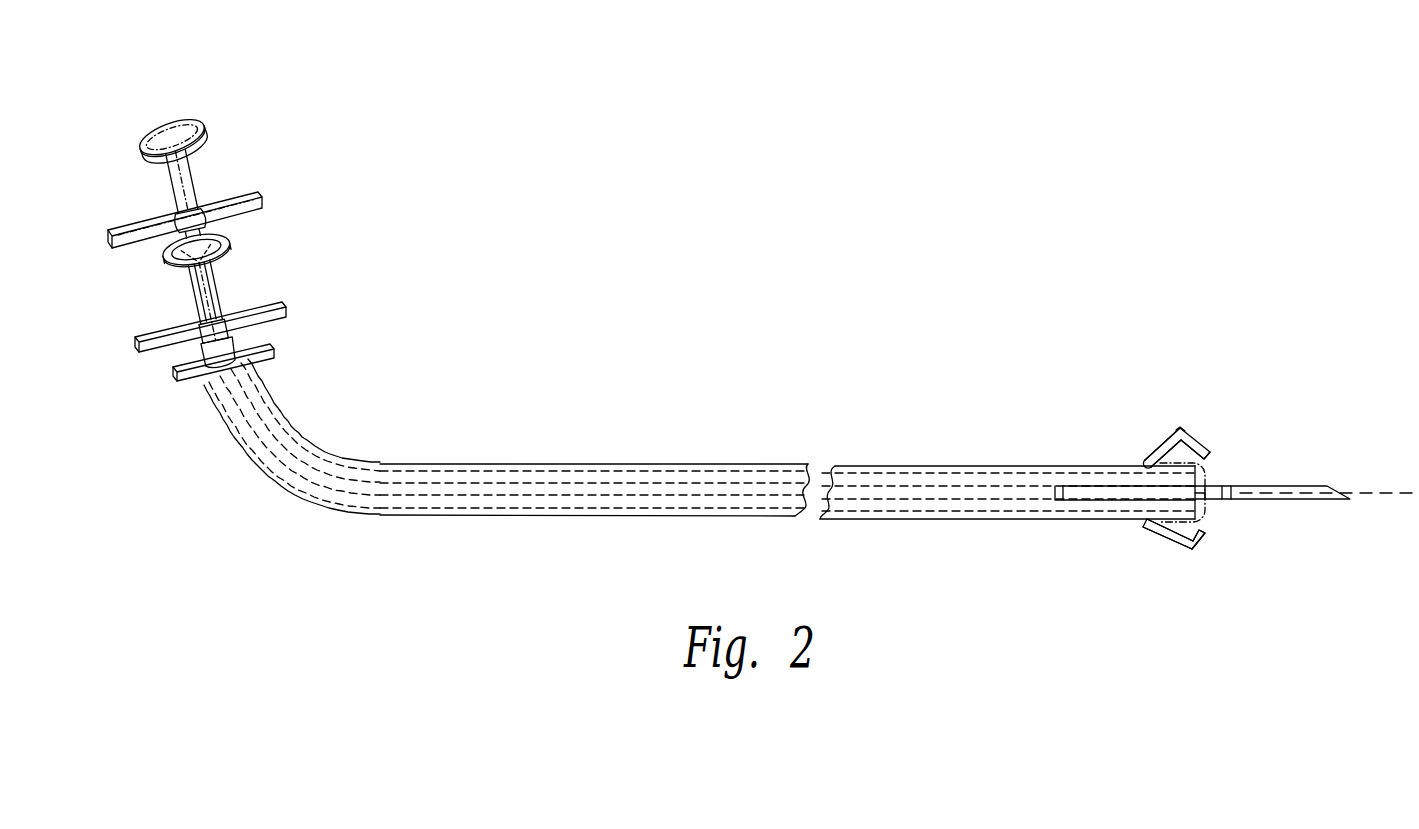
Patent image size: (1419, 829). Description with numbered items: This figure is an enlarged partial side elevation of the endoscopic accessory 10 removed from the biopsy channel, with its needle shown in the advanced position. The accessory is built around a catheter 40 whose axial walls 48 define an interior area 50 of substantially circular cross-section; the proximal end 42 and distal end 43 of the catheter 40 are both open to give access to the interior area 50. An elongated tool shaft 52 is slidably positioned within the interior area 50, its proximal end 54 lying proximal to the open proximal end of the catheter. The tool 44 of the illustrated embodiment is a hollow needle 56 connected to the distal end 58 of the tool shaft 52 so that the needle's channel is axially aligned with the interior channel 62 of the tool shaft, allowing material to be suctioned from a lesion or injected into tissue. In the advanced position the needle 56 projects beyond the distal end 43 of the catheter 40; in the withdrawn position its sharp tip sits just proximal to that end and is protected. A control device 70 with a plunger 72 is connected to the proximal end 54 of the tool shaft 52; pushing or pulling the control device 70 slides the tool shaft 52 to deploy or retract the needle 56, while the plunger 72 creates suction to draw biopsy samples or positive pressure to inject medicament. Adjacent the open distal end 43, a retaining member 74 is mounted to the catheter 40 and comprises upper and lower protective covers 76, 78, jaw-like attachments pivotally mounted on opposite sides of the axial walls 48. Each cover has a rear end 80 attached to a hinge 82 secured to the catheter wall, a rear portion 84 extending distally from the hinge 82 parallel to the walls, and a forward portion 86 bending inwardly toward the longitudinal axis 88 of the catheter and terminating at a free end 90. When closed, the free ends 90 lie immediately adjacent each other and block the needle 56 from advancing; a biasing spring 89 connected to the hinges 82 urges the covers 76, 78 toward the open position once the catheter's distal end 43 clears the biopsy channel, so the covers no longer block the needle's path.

The endoscopic accessory 10 is at (666, 458).
The catheter 40 is at (392, 462).
The proximal end 42 is at (302, 503).
The distal end 43 is at (1140, 466).
The tool 44 is at (1248, 512).
The axial walls 48 is at (538, 463).
The interior area 50 is at (628, 480).
The tool shaft 52 is at (422, 497).
The proximal end 54 is at (232, 383).
The hollow needle 56 is at (1285, 500).
The distal end 58 is at (1208, 498).
The interior channel 62 is at (946, 492).
The control device 70 is at (224, 294).
The plunger 72 is at (235, 235).
The retaining member 74 is at (1194, 403).
The upper protective cover 76 is at (1208, 450).
The lower protective cover 78 is at (1170, 540).
The rear end 80 is at (1148, 459).
The hinge 82 is at (1143, 459).
The rear portion 84 is at (1145, 523).
The forward portion 86 is at (1198, 546).
The longitudinal axis 88 is at (1385, 497).
The biasing spring 89 is at (1207, 448).
The free end 90 is at (1205, 469).